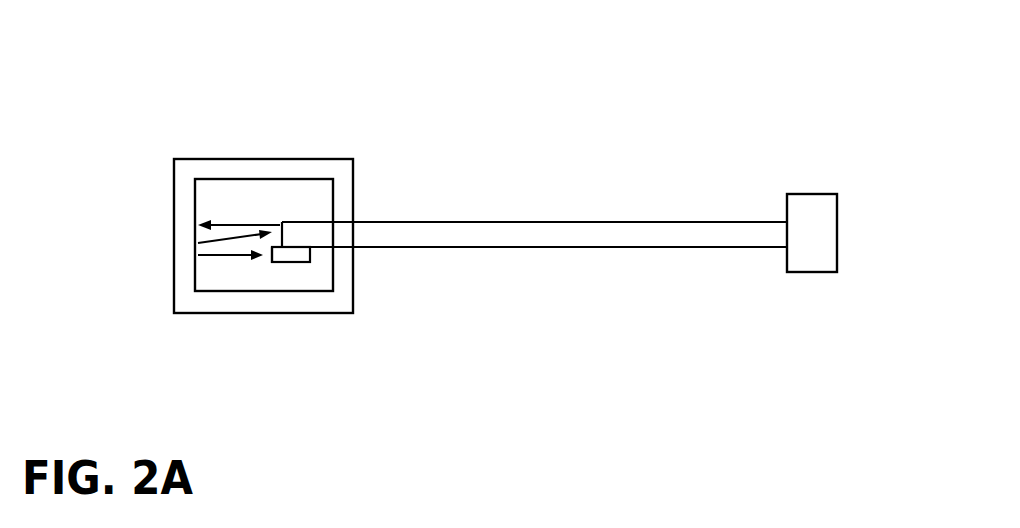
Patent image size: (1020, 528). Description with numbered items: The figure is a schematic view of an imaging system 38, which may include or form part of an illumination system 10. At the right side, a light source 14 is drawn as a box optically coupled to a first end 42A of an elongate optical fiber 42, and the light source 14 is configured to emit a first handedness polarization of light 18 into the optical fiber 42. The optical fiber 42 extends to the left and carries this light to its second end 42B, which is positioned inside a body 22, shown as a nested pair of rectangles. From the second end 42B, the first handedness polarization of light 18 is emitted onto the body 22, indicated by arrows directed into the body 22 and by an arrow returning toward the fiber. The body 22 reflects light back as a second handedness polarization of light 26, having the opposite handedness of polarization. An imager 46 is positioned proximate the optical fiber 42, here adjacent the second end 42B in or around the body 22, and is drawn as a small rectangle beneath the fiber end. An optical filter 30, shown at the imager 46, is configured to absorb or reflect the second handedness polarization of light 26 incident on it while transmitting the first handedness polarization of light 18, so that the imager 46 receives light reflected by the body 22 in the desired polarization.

The illumination system 10 is at (482, 110).
The light source 14 is at (837, 215).
The first handedness polarization of light 18 is at (236, 224).
The body 22 is at (268, 160).
The second handedness polarization of light 26 is at (226, 257).
The optical filter 30 is at (276, 260).
The imaging system 38 is at (665, 163).
The optical fiber 42 is at (545, 222).
The first end of the optical fiber 42A is at (785, 218).
The second end of the optical fiber 42B is at (302, 217).
The imager 46 is at (297, 258).